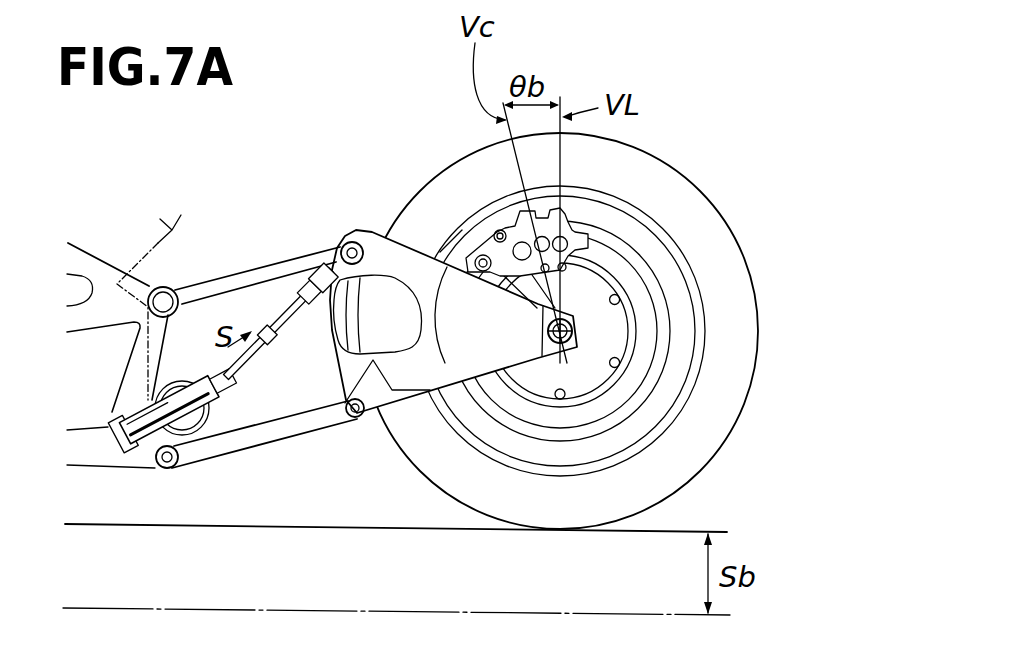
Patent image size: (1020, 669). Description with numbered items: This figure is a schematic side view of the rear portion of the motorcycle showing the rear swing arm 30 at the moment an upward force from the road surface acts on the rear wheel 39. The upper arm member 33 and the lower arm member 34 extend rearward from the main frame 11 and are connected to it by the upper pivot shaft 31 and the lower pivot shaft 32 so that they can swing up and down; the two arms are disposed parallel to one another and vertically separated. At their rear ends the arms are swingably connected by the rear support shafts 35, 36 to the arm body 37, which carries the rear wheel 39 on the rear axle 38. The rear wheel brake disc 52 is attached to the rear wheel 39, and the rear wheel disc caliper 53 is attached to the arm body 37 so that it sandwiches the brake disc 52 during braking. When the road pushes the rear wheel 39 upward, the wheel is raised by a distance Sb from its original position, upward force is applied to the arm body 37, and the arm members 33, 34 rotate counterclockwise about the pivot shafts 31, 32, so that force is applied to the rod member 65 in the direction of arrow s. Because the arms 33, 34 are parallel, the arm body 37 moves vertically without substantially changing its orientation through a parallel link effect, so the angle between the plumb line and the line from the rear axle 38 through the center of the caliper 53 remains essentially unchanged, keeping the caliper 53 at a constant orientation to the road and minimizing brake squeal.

The main frame 11 is at (106, 280).
The rear swing arm 30 is at (232, 238).
The upper pivot shaft 31 is at (166, 294).
The lower pivot shaft 32 is at (167, 469).
The upper arm member 33 is at (257, 270).
The lower arm member 34 is at (260, 438).
The rear support shaft 35 is at (343, 237).
The rear support shaft 36 is at (356, 417).
The arm body 37 is at (381, 253).
The rear axle 38 is at (577, 337).
The rear wheel 39 is at (731, 424).
The rear wheel brake disc 52 is at (602, 258).
The rear wheel disc caliper 53 is at (482, 256).
The rod member 65 is at (258, 352).